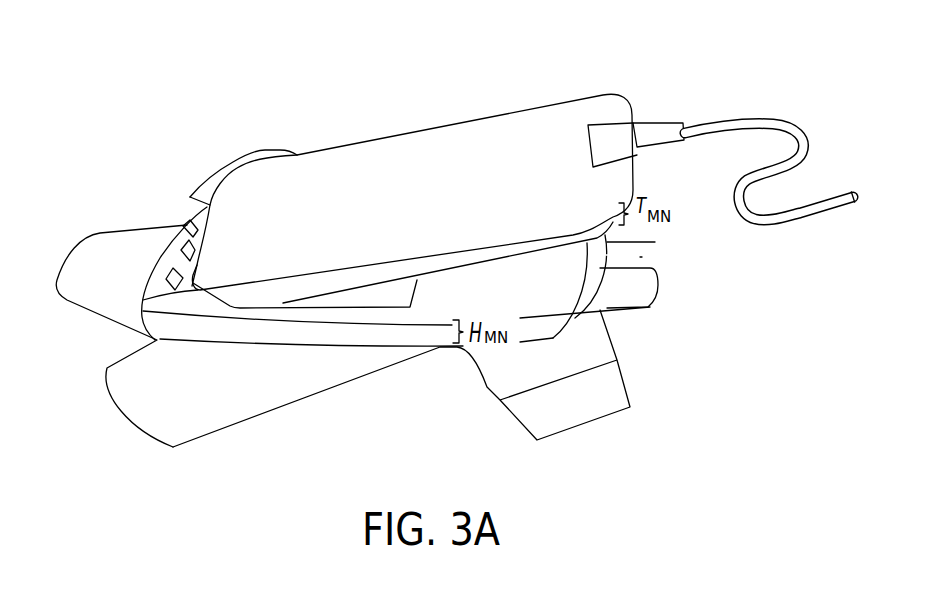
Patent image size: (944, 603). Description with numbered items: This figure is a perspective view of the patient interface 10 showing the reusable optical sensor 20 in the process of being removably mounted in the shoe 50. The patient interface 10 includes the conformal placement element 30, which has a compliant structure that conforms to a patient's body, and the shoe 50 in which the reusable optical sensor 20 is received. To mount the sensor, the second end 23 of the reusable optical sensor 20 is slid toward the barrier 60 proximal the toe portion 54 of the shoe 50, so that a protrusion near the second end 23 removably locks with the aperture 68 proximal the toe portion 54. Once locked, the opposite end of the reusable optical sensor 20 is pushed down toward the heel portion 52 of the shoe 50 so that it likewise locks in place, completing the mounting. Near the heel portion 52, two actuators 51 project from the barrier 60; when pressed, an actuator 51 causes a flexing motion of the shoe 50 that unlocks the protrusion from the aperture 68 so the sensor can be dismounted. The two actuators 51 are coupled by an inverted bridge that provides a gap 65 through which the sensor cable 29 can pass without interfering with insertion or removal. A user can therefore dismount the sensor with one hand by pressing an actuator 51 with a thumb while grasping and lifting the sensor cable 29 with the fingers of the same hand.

The patient interface 10 is at (246, 112).
The reusable optical sensor 20 is at (648, 93).
The second end 23 is at (190, 232).
The sensor cable 29 is at (677, 123).
The conformal placement element 30 is at (117, 215).
The shoe 50 is at (427, 355).
The actuator 51 is at (657, 228).
The heel portion 52 is at (573, 262).
The toe portion 54 is at (190, 302).
The barrier 60 is at (375, 338).
The gap 65 is at (642, 257).
The aperture 68 is at (143, 300).